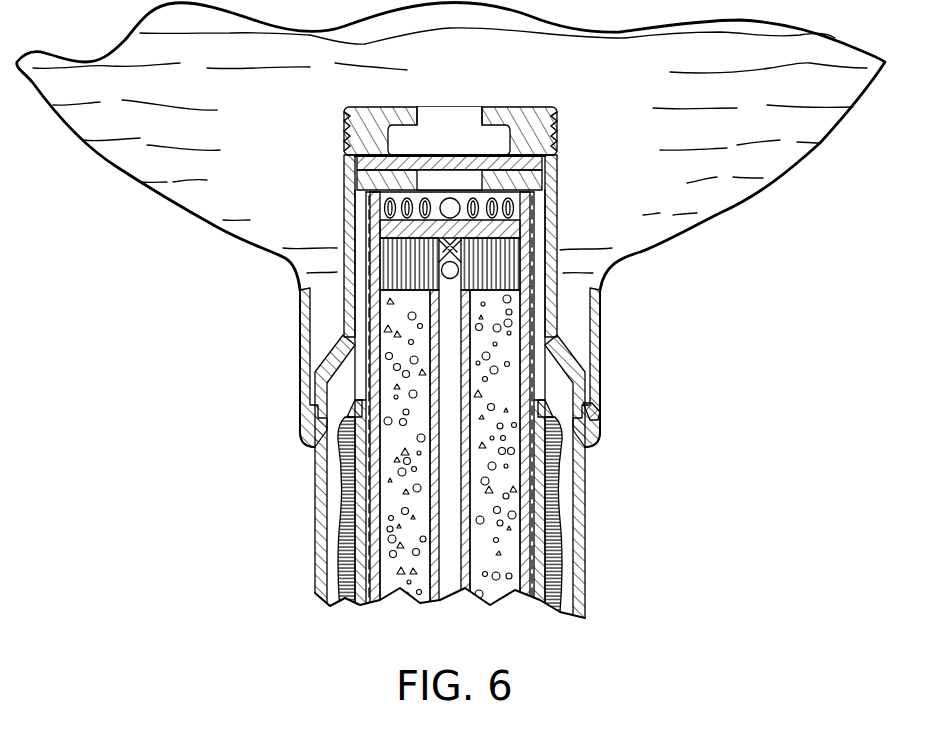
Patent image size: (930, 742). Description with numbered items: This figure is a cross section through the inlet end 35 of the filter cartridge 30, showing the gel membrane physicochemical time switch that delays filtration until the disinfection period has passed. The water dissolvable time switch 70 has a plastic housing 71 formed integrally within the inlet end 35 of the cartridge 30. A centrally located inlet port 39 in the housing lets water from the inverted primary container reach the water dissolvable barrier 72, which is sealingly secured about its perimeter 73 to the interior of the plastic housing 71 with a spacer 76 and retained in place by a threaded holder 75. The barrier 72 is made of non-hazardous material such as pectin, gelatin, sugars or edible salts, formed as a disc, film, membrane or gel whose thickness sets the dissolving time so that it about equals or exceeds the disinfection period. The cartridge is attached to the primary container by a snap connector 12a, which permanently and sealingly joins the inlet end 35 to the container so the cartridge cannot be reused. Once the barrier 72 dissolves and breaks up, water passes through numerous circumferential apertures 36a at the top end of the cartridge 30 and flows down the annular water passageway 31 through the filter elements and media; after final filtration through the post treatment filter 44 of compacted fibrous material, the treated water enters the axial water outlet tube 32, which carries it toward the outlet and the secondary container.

The snap connector 12a is at (590, 408).
The filter cartridge 30 is at (585, 548).
The water passageway 31 is at (363, 240).
The axial water outlet tube 32 is at (430, 545).
The inlet end 35 is at (573, 358).
The circumferential apertures 36a is at (377, 197).
The inlet port 39 is at (450, 115).
The post treatment filter 44 is at (397, 300).
The water dissolvable time switch 70 is at (442, 190).
The plastic housing 71 is at (555, 126).
The water dissolvable barrier 72 is at (357, 157).
The perimeter 73 is at (543, 165).
The threaded holder 75 is at (343, 112).
The spacer 76 is at (543, 188).